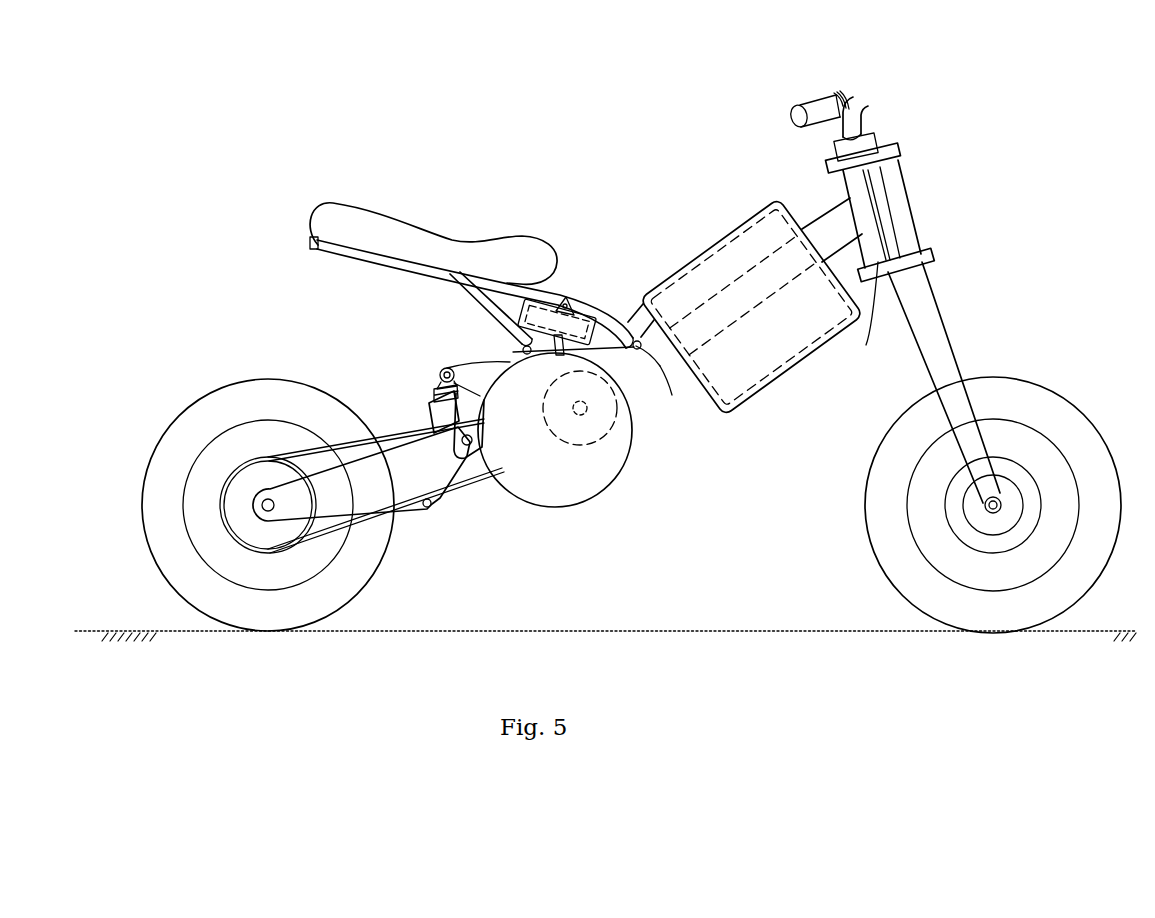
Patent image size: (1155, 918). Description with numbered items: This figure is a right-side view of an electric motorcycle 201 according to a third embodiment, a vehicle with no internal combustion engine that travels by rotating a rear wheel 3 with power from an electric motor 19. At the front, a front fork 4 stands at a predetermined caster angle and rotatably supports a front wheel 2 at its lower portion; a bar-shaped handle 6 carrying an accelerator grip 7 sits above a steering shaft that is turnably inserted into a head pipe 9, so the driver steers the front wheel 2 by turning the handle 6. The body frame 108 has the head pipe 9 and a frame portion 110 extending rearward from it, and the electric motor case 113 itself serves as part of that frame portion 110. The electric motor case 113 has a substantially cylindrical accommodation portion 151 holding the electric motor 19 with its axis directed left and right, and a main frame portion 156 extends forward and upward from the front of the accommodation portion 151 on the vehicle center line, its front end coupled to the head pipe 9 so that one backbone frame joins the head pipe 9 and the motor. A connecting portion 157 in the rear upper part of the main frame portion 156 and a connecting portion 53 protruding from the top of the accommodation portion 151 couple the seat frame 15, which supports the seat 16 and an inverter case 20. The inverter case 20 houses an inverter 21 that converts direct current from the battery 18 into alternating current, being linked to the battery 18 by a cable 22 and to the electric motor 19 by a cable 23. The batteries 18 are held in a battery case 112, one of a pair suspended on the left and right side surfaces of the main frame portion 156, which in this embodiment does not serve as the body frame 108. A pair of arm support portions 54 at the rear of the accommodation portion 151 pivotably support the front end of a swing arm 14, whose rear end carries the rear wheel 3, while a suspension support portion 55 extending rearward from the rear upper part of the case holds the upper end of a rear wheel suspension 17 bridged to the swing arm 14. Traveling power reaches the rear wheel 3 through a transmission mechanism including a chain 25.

The electric two-wheeled vehicle 201 is at (274, 114).
The front wheel 2 is at (1073, 407).
The rear wheel 3 is at (187, 407).
The front fork 4 is at (944, 345).
The handle 6 is at (856, 120).
The accelerator grip 7 is at (805, 100).
The head pipe 9 is at (876, 266).
The swing arm 14 is at (404, 518).
The seat frame 15 is at (312, 241).
The seat 16 is at (372, 213).
The rear wheel suspension 17 is at (432, 400).
The battery 18 is at (712, 240).
The electric motor 19 is at (582, 418).
The inverter case 20 is at (545, 318).
The inverter 21 is at (556, 340).
The cable 22 is at (635, 328).
The cable 23 is at (565, 300).
The chain 25 is at (303, 444).
The connecting portion 53 is at (505, 324).
The arm support portions 54 is at (445, 483).
The suspension support portion 55 is at (462, 363).
The body frame 108 is at (836, 456).
The frame portion 110 is at (690, 413).
The battery case 112 is at (733, 228).
The electric motor case 113 is at (543, 487).
The accommodation portion 151 is at (579, 448).
The main frame portion 156 is at (654, 358).
The connecting portion 157 is at (643, 357).